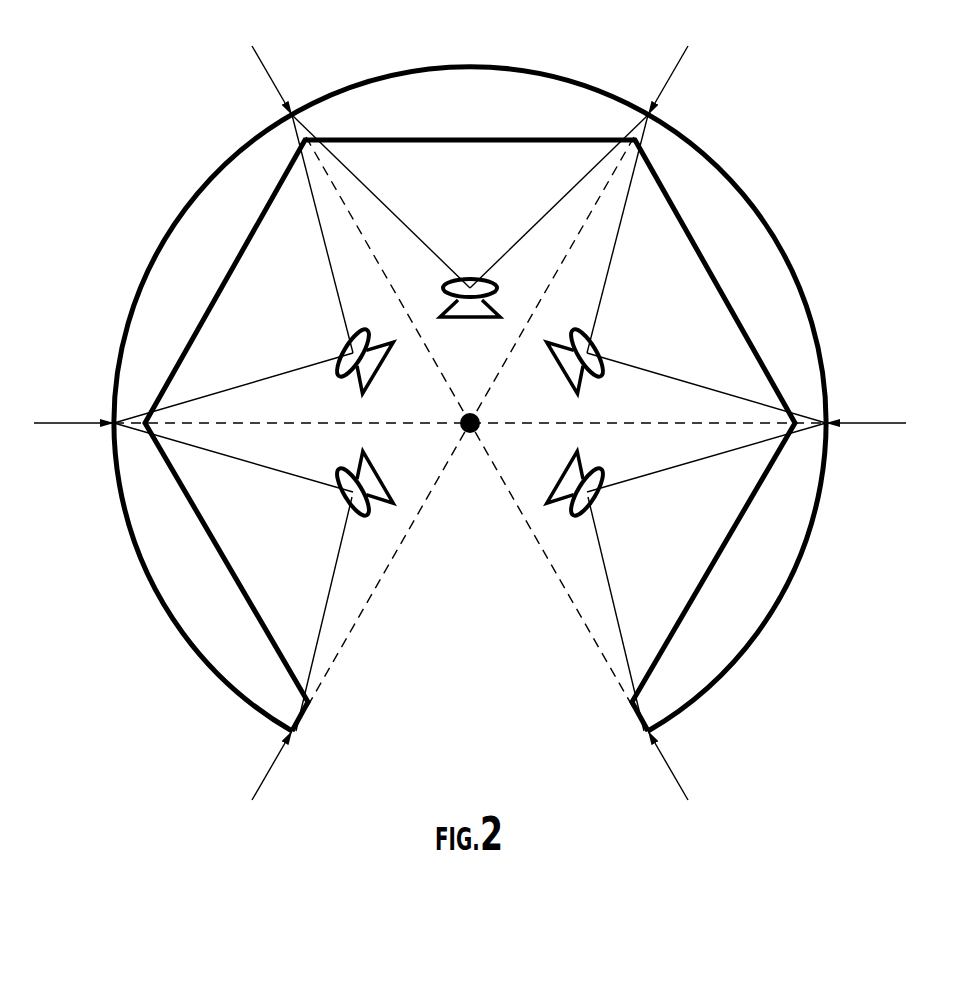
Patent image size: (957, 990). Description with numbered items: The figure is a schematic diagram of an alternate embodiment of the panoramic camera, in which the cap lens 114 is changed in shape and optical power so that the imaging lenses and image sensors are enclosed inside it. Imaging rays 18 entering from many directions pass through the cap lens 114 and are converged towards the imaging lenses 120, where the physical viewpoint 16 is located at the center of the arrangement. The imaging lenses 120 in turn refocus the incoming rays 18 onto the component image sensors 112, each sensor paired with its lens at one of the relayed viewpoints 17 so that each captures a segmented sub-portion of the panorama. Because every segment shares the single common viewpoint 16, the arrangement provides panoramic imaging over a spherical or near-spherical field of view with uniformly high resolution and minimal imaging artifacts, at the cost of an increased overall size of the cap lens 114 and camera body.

The physical viewpoint 16 is at (456, 412).
The relayed viewpoints 17 is at (461, 318).
The imaging rays 18 is at (264, 62).
The component image sensors 112 is at (490, 328).
The cap lens 114 is at (760, 244).
The imaging lenses 120 is at (565, 520).